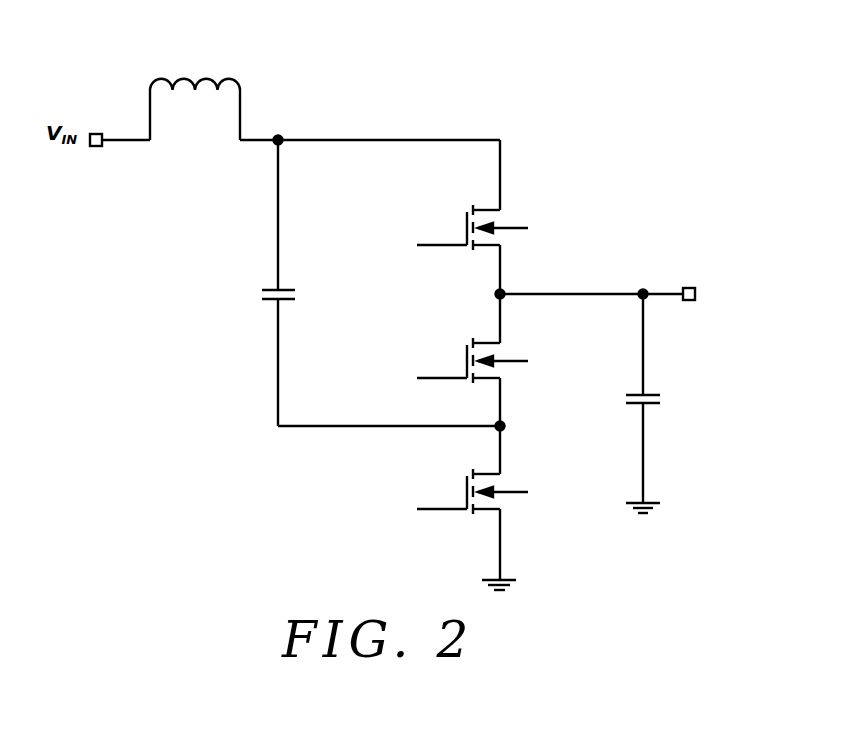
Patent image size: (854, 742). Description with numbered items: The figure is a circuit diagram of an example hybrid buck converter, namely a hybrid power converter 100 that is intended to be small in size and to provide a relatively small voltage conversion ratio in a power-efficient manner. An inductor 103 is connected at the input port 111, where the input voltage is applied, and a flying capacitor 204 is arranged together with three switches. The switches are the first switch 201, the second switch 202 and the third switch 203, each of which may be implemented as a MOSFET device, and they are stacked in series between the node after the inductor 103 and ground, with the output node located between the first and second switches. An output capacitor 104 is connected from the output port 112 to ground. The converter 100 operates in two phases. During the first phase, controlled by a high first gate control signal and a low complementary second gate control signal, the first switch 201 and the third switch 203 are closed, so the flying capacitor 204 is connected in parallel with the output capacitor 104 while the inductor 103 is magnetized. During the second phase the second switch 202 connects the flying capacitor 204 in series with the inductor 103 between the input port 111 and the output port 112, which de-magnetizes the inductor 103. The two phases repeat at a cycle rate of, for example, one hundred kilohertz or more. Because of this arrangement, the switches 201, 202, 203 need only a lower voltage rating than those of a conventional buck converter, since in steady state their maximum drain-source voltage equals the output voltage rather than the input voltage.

The hybrid power converter 100 is at (173, 443).
The input port 111 is at (98, 148).
The inductor 103 is at (197, 130).
The switch M1 201 is at (517, 220).
The second switch M2 202 is at (515, 353).
The switch M3 203 is at (515, 485).
The flying capacitor 204 is at (298, 292).
The output capacitor 104 is at (620, 398).
The output port 112 is at (689, 303).